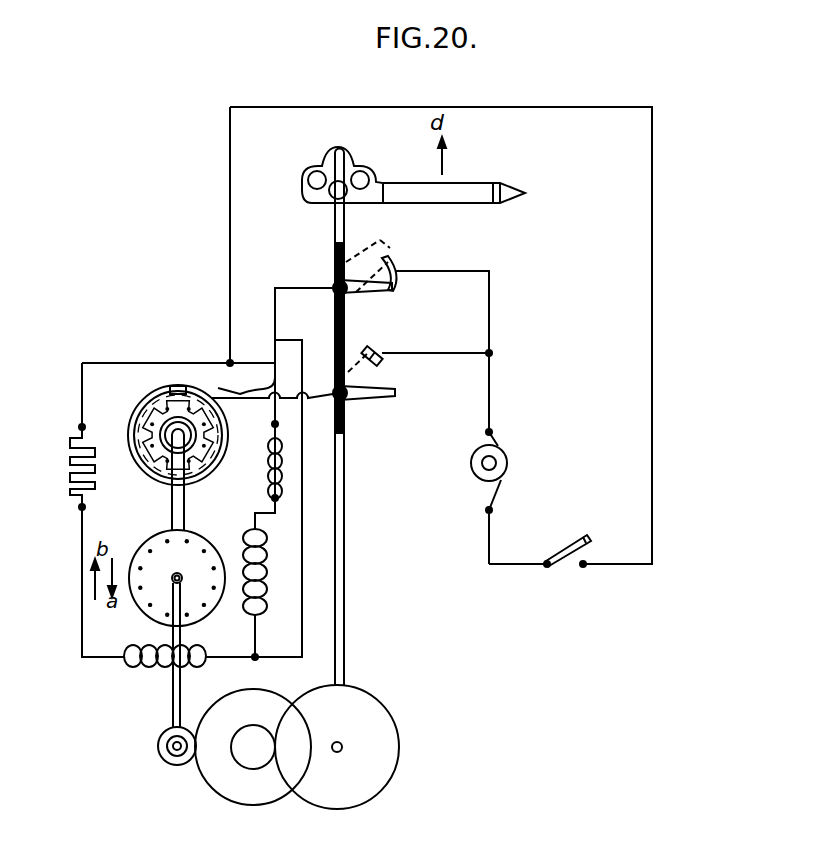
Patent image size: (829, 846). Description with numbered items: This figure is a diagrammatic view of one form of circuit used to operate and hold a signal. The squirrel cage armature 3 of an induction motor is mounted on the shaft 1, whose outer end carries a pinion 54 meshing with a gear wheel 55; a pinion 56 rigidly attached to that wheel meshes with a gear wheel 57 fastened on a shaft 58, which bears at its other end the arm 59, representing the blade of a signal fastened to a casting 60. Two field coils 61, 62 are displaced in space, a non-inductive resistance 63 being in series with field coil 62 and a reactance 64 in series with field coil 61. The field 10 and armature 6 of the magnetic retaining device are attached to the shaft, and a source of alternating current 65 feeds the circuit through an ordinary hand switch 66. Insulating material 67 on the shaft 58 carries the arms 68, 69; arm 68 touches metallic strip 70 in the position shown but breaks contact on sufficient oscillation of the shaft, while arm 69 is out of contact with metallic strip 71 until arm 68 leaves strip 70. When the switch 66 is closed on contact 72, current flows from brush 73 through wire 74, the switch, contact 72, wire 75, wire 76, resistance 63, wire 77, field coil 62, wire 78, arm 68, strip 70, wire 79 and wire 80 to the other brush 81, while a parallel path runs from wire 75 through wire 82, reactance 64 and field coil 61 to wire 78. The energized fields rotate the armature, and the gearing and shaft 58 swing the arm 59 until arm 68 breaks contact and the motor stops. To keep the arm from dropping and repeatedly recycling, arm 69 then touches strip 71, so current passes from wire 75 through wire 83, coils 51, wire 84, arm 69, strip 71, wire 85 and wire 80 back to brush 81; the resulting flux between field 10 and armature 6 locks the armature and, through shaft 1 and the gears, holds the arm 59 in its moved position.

The shaft 1 is at (186, 512).
The squirrel cage armature 3 is at (177, 628).
The armature of the retaining device 6 is at (132, 422).
The field of the retaining device 10 is at (142, 399).
The coils 51 is at (180, 386).
The pinion 54 is at (175, 763).
The gear wheel 55 is at (257, 804).
The pinion 56 is at (248, 729).
The gear wheel 57 is at (363, 804).
The shaft 58 is at (346, 603).
The arm 59 is at (467, 183).
The casting 60 is at (304, 180).
The field coil 61 is at (264, 557).
The field coil 62 is at (153, 663).
The non-inductive resistance 63 is at (93, 466).
The reactance 64 is at (270, 454).
The source of alternating current 65 is at (508, 462).
The hand switch 66 is at (565, 558).
The insulating material 67 is at (346, 326).
The arm 68 is at (377, 263).
The arm 69 is at (383, 397).
The metallic strip 70 is at (395, 265).
The metallic strip 71 is at (373, 347).
The contact 72 is at (586, 557).
The brush 73 is at (497, 492).
The wire 74 is at (487, 567).
The wire 75 is at (653, 375).
The wire 76 is at (145, 362).
The wire 77 is at (82, 666).
The wire 78 is at (310, 576).
The wire 79 is at (490, 306).
The wire 80 is at (490, 390).
The brush 81 is at (483, 444).
The wire 82 is at (272, 360).
The wire 83 is at (229, 384).
The wire 84 is at (252, 397).
The wire 85 is at (445, 358).